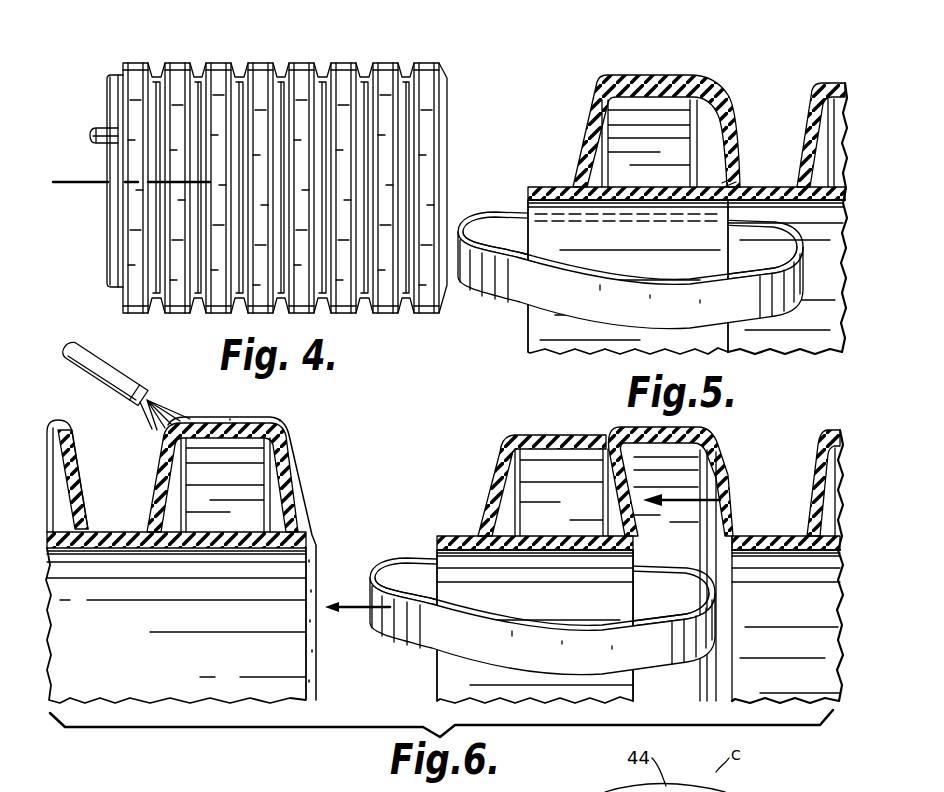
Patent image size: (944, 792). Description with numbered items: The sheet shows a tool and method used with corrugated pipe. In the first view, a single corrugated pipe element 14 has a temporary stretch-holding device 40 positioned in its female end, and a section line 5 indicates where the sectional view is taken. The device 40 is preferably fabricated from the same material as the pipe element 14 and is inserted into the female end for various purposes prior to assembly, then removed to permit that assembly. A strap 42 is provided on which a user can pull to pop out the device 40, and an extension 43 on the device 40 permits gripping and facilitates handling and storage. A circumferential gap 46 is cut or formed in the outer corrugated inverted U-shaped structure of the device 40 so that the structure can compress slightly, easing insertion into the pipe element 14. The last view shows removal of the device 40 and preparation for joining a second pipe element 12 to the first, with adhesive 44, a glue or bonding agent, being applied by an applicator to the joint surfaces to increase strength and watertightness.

In FIG. 6, the pipe element 12 is at (92, 468).
In FIG. 4, the pipe element 14 is at (258, 60).
In FIG. 5, the pipe element 14 is at (737, 96).
In FIG. 6, the pipe element 14 is at (746, 460).
In FIG. 4, the temporary stretch-holding device 40 is at (98, 103).
In FIG. 5, the temporary stretch-holding device 40 is at (569, 123).
In FIG. 6, the temporary stretch-holding device 40 is at (486, 453).
In FIG. 4, the strap 42 is at (94, 138).
In FIG. 5, the strap 42 is at (528, 292).
In FIG. 6, the strap 42 is at (400, 560).
In FIG. 4, the extension 43 is at (110, 78).
In FIG. 5, the extension 43 is at (552, 186).
In FIG. 6, the extension 43 is at (457, 536).
In FIG. 6, the adhesive 44 is at (291, 426).
In FIG. 5, the circumferential gap 46 is at (728, 188).
In FIG. 6, the circumferential gap 46 is at (633, 538).
In FIG. 4, the section line 5 is at (178, 193).